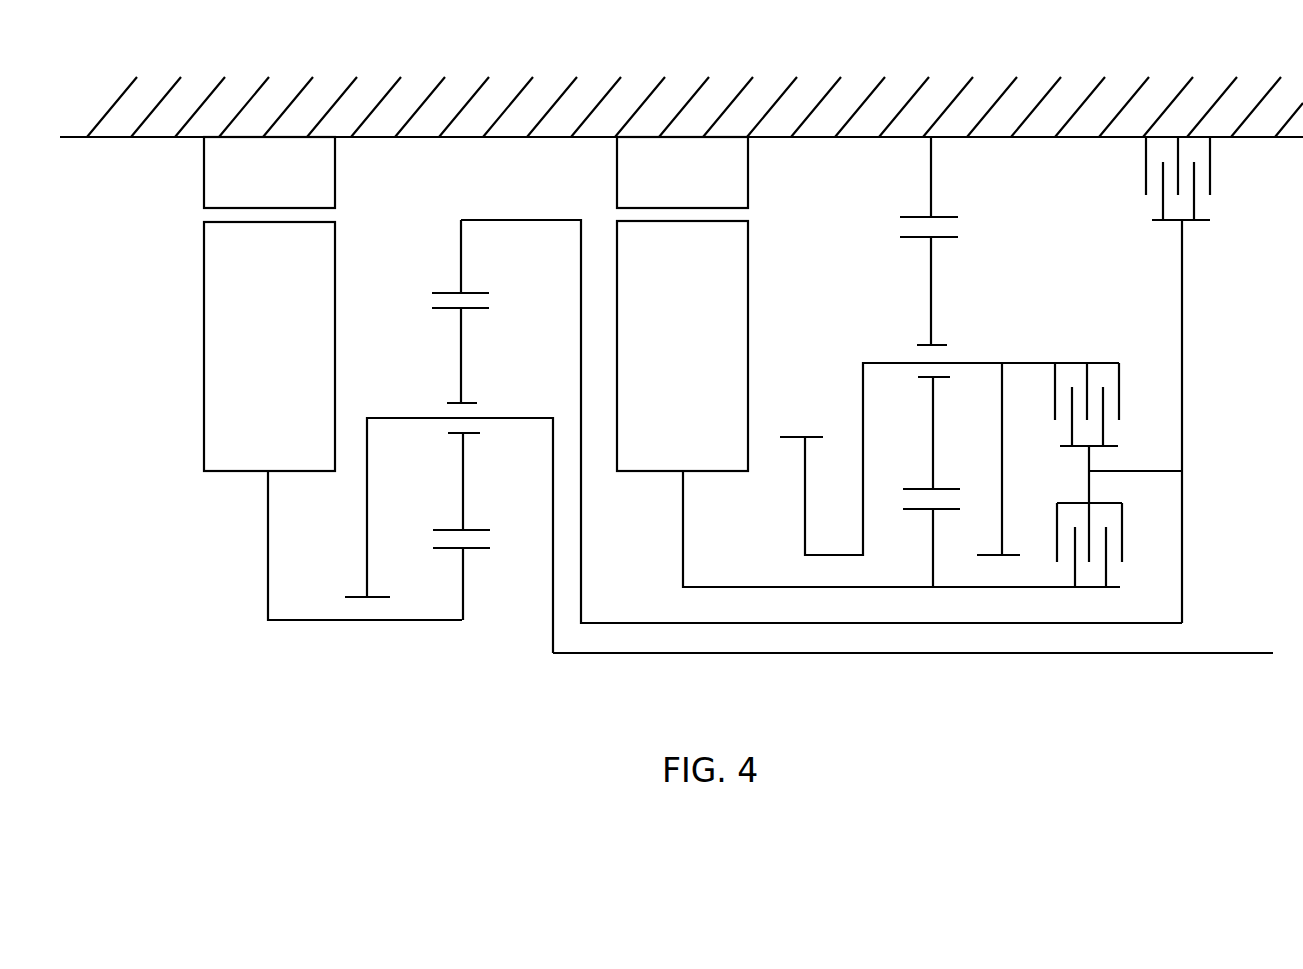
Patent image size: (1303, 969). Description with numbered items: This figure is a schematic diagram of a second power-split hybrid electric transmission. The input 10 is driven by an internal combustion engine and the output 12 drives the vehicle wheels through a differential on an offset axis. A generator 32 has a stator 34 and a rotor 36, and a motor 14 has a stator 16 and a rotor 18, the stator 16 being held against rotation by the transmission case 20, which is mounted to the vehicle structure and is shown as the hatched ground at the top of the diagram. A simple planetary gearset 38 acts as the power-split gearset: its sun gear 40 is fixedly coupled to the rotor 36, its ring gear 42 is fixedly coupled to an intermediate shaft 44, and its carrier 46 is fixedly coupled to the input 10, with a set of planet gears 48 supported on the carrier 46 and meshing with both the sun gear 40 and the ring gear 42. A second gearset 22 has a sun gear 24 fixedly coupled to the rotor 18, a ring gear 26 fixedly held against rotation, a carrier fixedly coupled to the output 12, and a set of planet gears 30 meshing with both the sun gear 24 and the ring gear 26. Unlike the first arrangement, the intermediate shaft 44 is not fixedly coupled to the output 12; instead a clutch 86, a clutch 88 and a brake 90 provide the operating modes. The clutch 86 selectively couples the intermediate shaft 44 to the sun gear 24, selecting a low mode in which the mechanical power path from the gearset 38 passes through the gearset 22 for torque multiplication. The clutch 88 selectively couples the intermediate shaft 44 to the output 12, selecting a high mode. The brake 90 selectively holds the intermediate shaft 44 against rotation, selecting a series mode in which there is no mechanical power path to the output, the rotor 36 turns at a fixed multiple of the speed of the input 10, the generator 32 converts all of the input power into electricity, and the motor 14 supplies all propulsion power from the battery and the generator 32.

The input 10 is at (1242, 655).
The output 12 is at (800, 432).
The motor 14 is at (681, 90).
The stator 16 is at (615, 182).
The rotor 18 is at (748, 310).
The transmission case 20 is at (665, 247).
The gearset 22 is at (913, 680).
The sun gear 24 is at (933, 532).
The ring gear 26 is at (931, 173).
The planet gears 30 is at (931, 303).
The generator 32 is at (262, 257).
The stator 34 is at (203, 172).
The rotor 36 is at (337, 348).
The simple planetary gearset 38 is at (460, 563).
The sun gear 40 is at (463, 592).
The ring gear 42 is at (460, 250).
The intermediate shaft 44 is at (620, 623).
The carrier 46 is at (365, 517).
The planet gears 48 is at (463, 365).
The clutch 86 is at (1120, 525).
The clutch 88 is at (1073, 363).
The brake 90 is at (1146, 173).